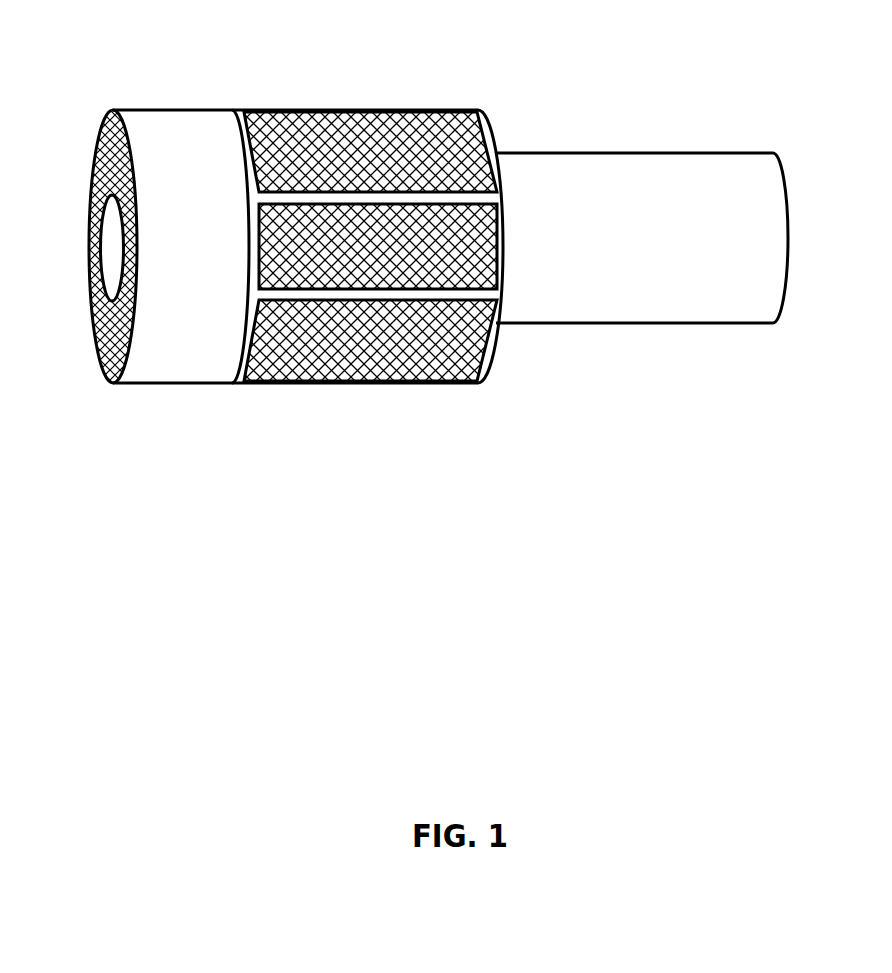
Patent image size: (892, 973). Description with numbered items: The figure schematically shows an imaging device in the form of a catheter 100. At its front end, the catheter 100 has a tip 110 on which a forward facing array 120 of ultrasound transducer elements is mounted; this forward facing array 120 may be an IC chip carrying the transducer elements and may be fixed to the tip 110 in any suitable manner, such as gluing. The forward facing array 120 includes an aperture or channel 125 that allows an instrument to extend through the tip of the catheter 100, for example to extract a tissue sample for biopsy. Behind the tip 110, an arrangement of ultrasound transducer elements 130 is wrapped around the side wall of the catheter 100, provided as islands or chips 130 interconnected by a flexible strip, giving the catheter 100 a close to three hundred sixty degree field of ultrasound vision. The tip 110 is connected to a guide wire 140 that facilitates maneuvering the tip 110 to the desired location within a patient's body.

The catheter 100 is at (434, 354).
The tip 110 is at (192, 370).
The forward facing array 120 is at (108, 376).
The aperture or channel 125 is at (112, 250).
The islands or chips carrying ultrasound transducer elements 130 is at (372, 356).
The guide wire 140 is at (680, 302).